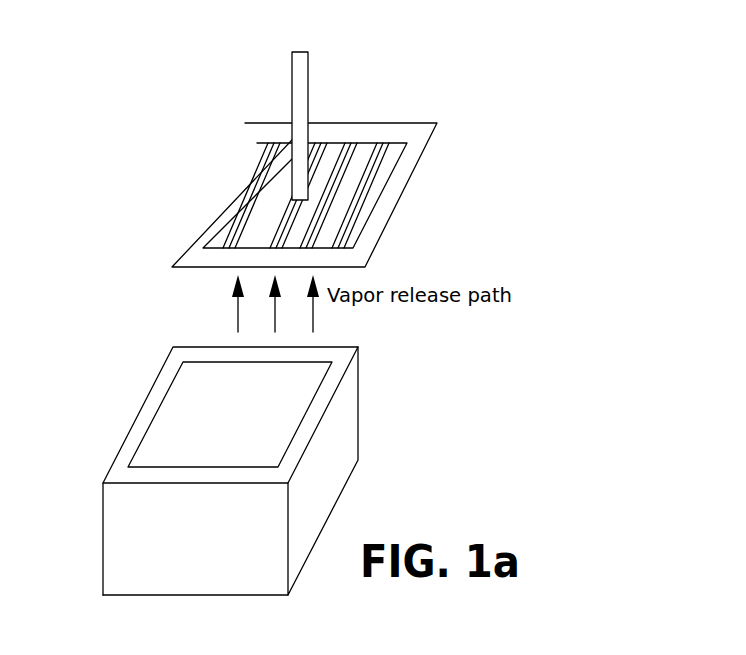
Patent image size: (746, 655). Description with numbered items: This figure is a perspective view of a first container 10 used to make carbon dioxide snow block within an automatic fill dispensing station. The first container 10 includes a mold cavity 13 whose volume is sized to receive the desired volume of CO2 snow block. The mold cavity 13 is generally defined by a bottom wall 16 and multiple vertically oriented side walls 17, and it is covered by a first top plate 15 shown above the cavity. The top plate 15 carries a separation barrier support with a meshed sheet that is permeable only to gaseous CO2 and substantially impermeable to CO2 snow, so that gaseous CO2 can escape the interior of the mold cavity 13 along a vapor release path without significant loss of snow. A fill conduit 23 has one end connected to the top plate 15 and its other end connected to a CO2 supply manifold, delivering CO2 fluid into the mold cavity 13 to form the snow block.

The first container 10 is at (81, 370).
The mold cavity 13 is at (360, 407).
The first top plate 15 is at (477, 112).
The bottom wall 16 is at (202, 595).
The side walls 17 is at (158, 538).
The fill conduit 23 is at (320, 53).